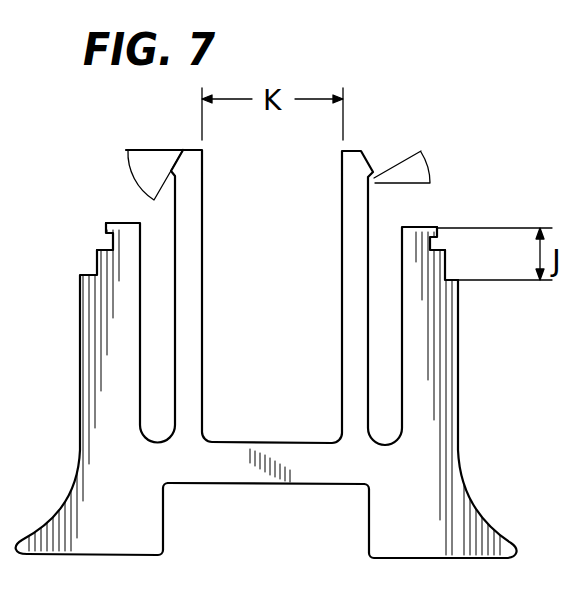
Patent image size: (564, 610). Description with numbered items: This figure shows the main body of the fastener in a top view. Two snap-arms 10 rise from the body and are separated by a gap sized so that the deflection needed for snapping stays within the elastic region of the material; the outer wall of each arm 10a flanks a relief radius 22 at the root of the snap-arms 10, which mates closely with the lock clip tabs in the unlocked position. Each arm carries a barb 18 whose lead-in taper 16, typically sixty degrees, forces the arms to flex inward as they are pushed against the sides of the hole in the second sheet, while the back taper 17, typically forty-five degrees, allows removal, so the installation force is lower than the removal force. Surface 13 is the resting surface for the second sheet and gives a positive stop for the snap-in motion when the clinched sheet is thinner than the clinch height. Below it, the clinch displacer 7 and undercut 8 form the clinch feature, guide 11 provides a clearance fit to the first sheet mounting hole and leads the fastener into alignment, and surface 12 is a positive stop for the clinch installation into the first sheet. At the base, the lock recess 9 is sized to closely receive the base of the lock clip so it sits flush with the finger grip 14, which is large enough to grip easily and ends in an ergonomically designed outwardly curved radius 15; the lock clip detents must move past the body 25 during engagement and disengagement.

The clinch displacer 7 is at (447, 272).
The undercut 8 is at (432, 247).
The lock recess 9 is at (163, 517).
The snap-arms 10 is at (203, 257).
The outer wall 10a is at (385, 323).
The guide 11 is at (104, 230).
The surface 12 is at (82, 276).
The surface 13 is at (121, 222).
The finger grip 14 is at (408, 547).
The outwardly curved radius 15 is at (487, 518).
The lead-in taper 16 is at (140, 175).
The back taper 17 is at (421, 163).
The barbs 18 is at (370, 160).
The relief radii 22 is at (203, 436).
The body 25 is at (316, 462).